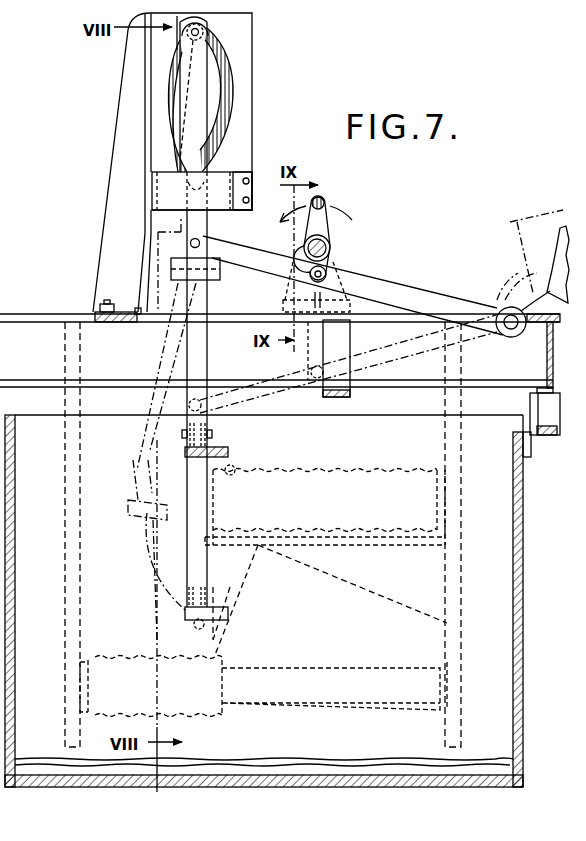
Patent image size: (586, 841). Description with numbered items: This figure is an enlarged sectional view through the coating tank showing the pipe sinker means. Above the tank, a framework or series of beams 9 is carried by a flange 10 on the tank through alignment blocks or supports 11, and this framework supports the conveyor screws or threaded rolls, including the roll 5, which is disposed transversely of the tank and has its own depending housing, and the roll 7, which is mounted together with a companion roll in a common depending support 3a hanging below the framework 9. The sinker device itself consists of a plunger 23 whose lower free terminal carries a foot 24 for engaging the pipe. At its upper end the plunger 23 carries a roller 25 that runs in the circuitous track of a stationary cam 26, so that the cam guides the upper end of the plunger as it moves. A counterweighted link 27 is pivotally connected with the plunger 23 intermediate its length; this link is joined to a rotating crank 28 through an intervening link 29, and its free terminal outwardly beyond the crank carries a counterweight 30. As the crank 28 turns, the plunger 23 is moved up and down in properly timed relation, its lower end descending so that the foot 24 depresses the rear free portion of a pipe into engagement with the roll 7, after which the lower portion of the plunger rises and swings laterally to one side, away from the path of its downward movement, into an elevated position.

The common depending support 3a is at (65, 625).
The conveyor screw or threaded roll 5 is at (335, 473).
The conveyor screw or threaded roll 7 is at (109, 655).
The framework or series of beams 9 is at (32, 333).
The flange 10 is at (537, 437).
The alignment blocks or supports 11 is at (536, 414).
The plunger 23 is at (207, 363).
The foot 24 is at (220, 447).
The roller 25 is at (202, 30).
The stationary cam 26 is at (218, 85).
The counterweighted link 27 is at (413, 293).
The rotating crank 28 is at (322, 226).
The intervening link 29 is at (328, 268).
The counterweight 30 is at (557, 262).